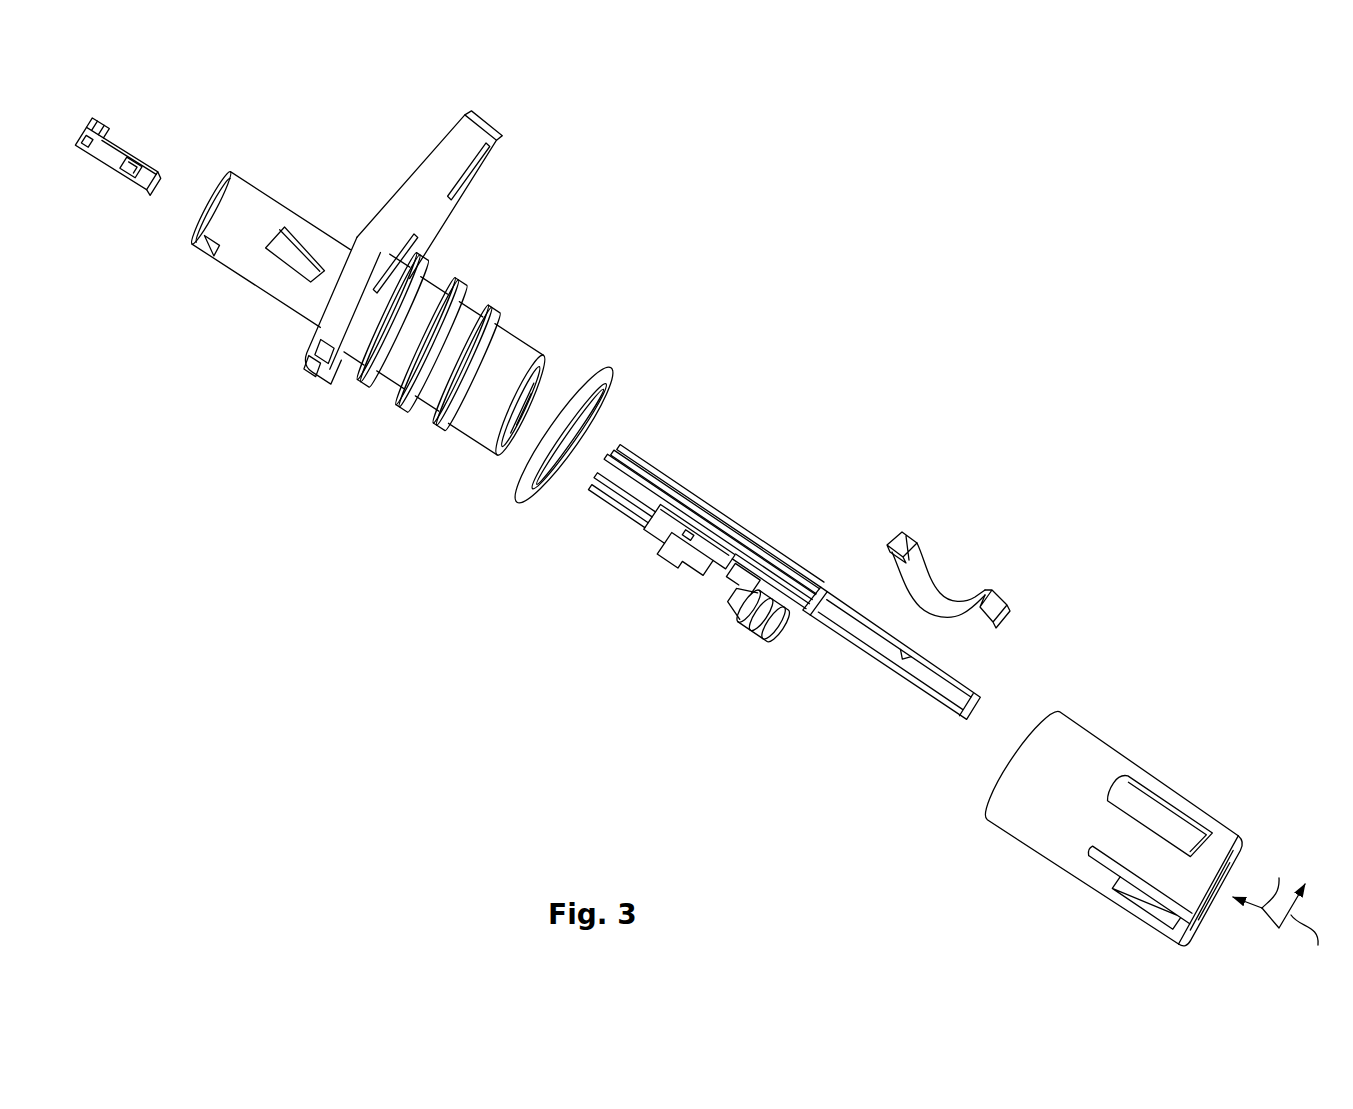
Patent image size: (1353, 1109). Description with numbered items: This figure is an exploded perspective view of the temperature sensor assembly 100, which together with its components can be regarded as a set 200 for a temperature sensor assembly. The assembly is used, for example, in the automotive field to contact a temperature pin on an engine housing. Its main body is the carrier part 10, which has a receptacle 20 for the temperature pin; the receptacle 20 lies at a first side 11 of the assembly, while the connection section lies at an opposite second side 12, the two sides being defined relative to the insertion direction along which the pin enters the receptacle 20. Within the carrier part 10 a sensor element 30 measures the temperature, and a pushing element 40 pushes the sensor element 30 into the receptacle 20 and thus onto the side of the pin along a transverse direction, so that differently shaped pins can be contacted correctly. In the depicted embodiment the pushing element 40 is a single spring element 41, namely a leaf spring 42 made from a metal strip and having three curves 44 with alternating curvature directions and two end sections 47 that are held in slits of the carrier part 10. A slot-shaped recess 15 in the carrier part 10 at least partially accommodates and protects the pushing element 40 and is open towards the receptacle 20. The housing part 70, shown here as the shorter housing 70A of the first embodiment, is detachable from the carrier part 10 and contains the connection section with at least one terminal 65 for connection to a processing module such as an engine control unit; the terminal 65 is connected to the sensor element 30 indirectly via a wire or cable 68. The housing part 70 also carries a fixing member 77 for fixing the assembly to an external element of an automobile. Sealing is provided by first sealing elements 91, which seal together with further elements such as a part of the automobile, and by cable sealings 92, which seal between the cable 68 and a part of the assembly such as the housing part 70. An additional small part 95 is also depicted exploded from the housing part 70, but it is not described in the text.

The set for a temperature sensor assembly 200 is at (627, 130).
The temperature sensor assembly 100 is at (627, 252).
The second side 12 is at (262, 430).
The housing part 70 is at (312, 375).
The housing 70A is at (353, 223).
The fixing member 77 is at (440, 135).
The locking clip 95 is at (143, 156).
The first sealing elements 91 is at (603, 368).
The wire or cable 68 is at (682, 492).
The terminal 65 is at (618, 492).
The cable sealings 92 is at (758, 625).
The sensor element 30 is at (870, 678).
The pushing element 40 is at (956, 575).
The leaf spring 42 is at (910, 527).
The spring element 41 is at (988, 587).
The end sections 47 is at (888, 532).
The curves 44 is at (897, 567).
The carrier part 10 is at (1129, 825).
The recess 15 is at (1153, 810).
The receptacle 20 is at (1193, 935).
The first side 11 is at (1240, 828).